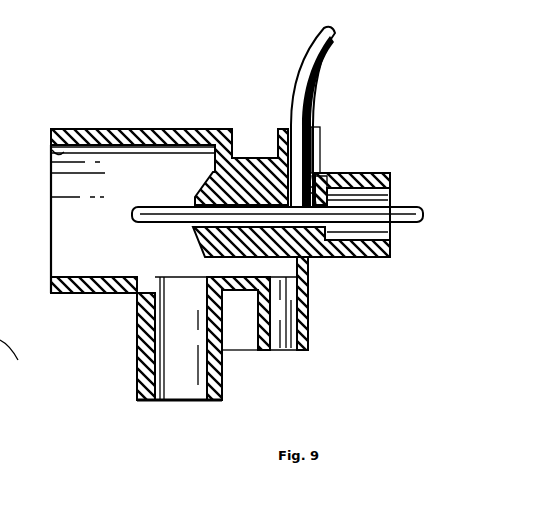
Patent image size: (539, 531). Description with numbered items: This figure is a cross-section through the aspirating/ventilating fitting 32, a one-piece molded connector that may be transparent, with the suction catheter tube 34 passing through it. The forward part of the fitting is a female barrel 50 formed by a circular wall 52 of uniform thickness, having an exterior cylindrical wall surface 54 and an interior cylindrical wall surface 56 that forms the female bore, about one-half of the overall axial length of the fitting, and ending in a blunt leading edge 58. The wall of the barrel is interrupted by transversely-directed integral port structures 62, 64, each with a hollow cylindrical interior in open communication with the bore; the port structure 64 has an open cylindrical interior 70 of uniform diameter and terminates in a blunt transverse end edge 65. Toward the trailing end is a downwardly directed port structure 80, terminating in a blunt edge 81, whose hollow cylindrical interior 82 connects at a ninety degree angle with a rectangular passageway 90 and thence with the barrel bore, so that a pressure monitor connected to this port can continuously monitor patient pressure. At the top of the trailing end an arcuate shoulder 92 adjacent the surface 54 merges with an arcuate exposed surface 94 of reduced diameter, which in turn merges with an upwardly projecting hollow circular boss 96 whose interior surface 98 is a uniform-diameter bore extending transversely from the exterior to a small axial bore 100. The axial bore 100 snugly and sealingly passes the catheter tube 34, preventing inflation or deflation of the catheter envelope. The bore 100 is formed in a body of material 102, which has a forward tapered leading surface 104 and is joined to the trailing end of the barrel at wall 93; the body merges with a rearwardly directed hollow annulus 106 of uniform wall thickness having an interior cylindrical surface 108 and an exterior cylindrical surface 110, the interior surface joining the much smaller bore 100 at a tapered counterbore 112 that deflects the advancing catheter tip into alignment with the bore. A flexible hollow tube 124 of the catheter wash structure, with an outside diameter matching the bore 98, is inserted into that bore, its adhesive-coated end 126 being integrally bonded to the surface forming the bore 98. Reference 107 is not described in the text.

The aspirating/ventilating fitting 32 is at (185, 106).
The suction catheter tube 34 is at (403, 194).
The female barrel 50 is at (152, 128).
The circular wall 52 is at (88, 129).
The exterior cylindrical wall surface 54 is at (70, 129).
The interior cylindrical wall surface 56 is at (52, 150).
The leading edge 58 is at (51, 132).
The port structure 62 is at (18, 360).
The port structure 64 is at (140, 396).
The blunt transverse end edge 65 is at (150, 403).
The open cylindrical interior 70 is at (182, 345).
The downwardly directed port structure 80 is at (308, 325).
The blunt edge 81 is at (305, 350).
The hollow cylindrical interior 82 is at (283, 303).
The rectangular passageway 90 is at (252, 291).
The arcuate shoulder 92 is at (249, 157).
The tube 93 is at (150, 151).
The arcuate exposed surface 94 is at (288, 150).
The hollow circular boss 96 is at (316, 128).
The interior surface 98 is at (320, 160).
The axial bore 100 is at (195, 212).
The body of material 102 is at (254, 184).
The forward tapered leading surface 104 is at (193, 246).
The hollow annulus 106 is at (375, 258).
The wall 107 is at (385, 258).
The interior cylindrical surface 108 is at (355, 180).
The exterior cylindrical surface 110 is at (365, 258).
The tapered counterbore 112 is at (340, 183).
The flexible hollow tube 124 is at (302, 68).
The end 126 is at (335, 176).